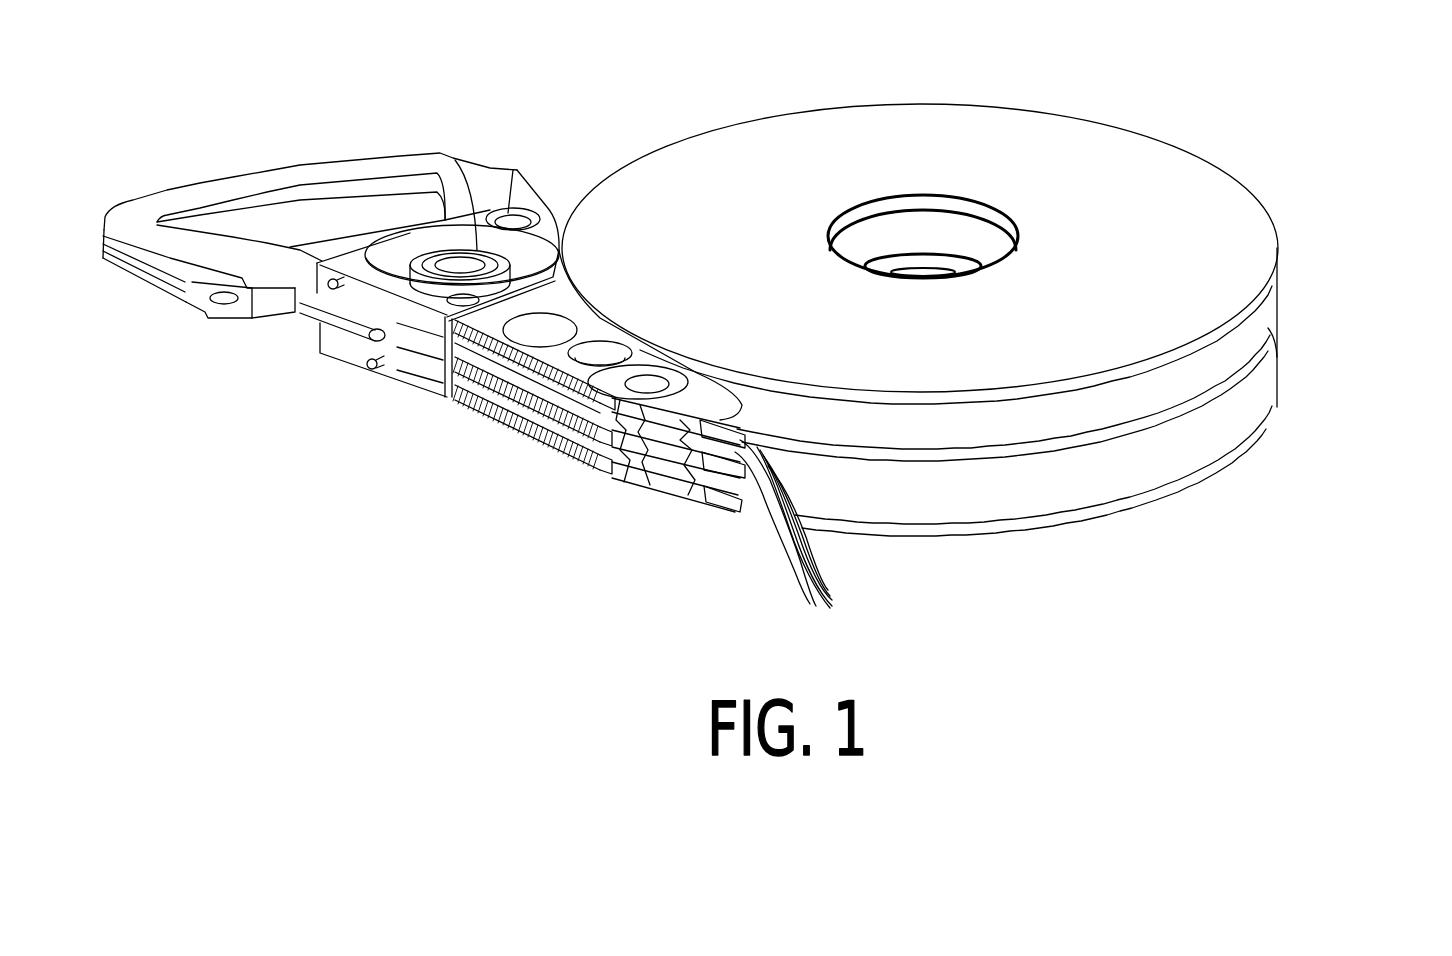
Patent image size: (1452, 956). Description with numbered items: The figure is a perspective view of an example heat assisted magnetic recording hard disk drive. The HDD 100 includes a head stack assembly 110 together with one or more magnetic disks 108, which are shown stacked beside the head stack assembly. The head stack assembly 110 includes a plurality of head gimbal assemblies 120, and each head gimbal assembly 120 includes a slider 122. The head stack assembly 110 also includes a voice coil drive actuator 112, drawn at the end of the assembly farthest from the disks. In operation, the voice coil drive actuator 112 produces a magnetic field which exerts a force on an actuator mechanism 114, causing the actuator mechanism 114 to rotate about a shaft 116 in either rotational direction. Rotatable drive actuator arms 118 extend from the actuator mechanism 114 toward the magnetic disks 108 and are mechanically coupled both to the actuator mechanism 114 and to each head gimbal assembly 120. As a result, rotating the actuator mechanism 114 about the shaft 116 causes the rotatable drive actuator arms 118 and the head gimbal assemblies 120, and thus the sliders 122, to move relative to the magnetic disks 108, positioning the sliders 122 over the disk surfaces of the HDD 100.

The hard disk drive 100 is at (1278, 50).
The magnetic disk 108 is at (1092, 122).
The head stack assembly 110 is at (600, 532).
The voice coil drive actuator 112 is at (258, 168).
The actuator mechanism 114 is at (547, 187).
The shaft 116 is at (468, 255).
The rotatable drive actuator arm 118 is at (493, 378).
The head gimbal assembly 120 is at (742, 426).
The slider 122 is at (834, 600).